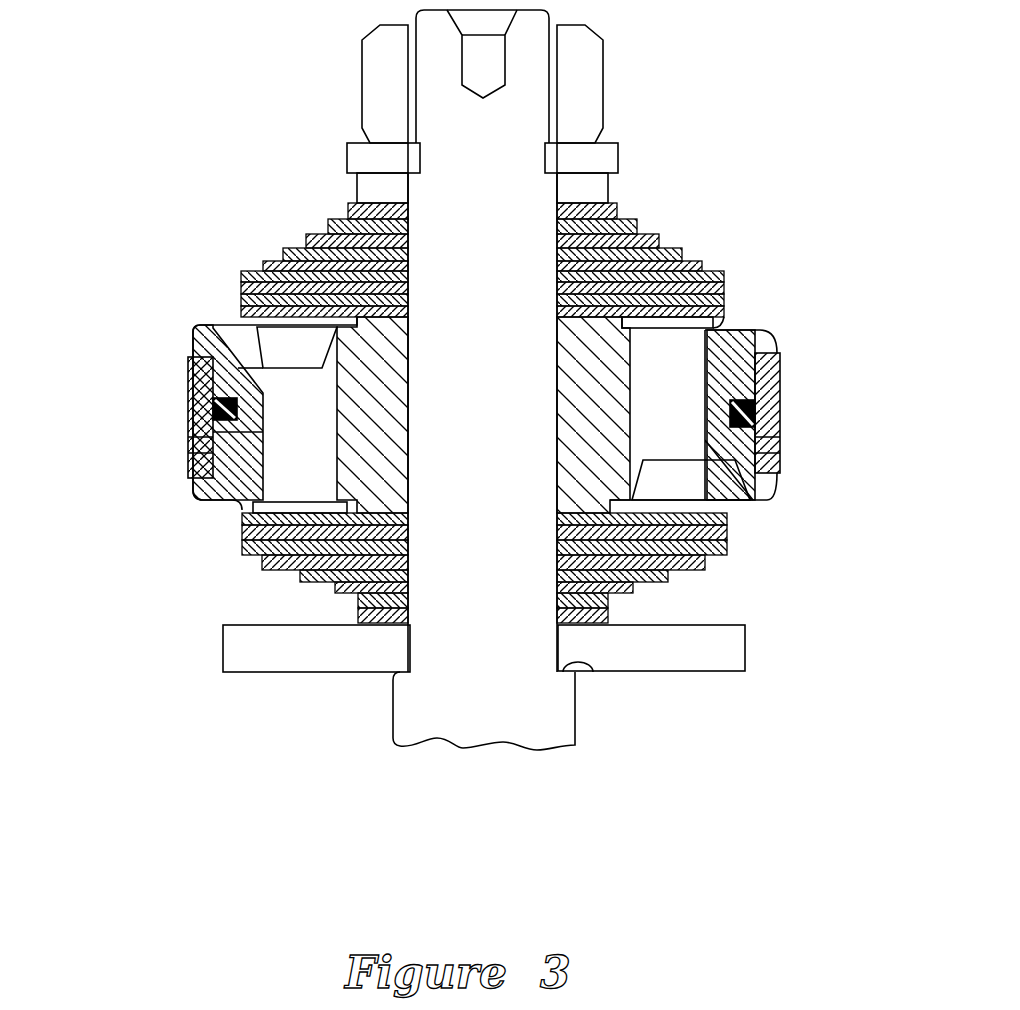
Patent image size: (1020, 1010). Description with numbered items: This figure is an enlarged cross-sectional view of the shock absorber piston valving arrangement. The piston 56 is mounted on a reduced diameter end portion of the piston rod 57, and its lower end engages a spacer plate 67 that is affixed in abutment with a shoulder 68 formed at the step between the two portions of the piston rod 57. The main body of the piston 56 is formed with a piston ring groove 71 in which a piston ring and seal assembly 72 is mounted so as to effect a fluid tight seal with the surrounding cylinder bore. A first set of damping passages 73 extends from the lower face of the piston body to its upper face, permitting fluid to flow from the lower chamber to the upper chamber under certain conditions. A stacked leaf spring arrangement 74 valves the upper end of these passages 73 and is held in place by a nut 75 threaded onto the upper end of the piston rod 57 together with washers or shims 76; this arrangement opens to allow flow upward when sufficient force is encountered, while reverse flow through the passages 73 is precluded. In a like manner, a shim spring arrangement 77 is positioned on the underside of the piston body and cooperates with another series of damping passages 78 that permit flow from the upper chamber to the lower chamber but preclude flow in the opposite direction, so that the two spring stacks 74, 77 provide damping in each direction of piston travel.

The piston 56 is at (287, 232).
The piston rod 57 is at (420, 708).
The spacer plate 67 is at (683, 655).
The shoulder 68 is at (193, 345).
The piston ring groove 71 is at (778, 462).
The piston ring and seal assembly 72 is at (183, 415).
The first set of damping passages 73 is at (687, 382).
The stacked leaf spring arrangement 74 is at (675, 227).
The nut 75 is at (592, 62).
The washers or shims 76 is at (608, 192).
The shim spring arrangement 77 is at (706, 577).
The damping passages 78 is at (290, 455).